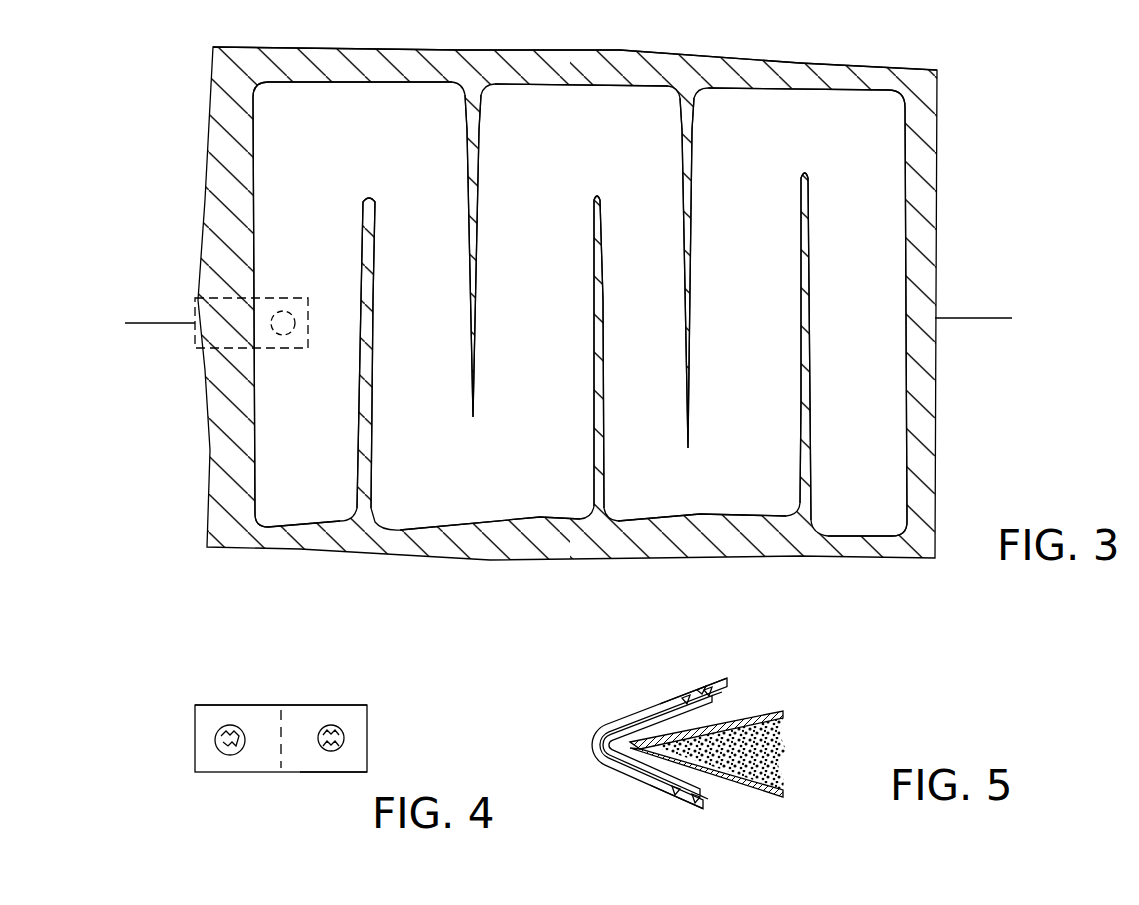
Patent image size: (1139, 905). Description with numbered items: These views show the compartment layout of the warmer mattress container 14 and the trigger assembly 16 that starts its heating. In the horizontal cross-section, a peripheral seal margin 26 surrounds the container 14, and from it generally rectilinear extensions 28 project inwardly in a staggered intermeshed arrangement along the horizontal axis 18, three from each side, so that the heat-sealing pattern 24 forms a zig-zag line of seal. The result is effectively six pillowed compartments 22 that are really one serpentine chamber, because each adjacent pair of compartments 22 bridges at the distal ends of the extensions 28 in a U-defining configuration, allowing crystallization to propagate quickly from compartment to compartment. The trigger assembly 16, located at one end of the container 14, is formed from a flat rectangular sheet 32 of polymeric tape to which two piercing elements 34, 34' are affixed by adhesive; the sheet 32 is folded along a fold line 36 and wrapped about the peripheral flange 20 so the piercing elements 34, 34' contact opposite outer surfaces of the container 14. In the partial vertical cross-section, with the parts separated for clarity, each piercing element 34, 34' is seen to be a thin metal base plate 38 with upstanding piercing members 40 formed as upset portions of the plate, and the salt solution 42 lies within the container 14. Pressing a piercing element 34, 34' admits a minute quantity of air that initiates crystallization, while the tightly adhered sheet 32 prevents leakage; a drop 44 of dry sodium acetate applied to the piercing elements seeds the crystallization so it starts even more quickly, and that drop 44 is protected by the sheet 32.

In FIG. 5, the container 14 is at (783, 712).
In FIG. 4, the trigger assembly 16 is at (190, 732).
In FIG. 5, the trigger assembly 16 is at (703, 821).
In FIG. 3, the horizontal axis 18 is at (165, 323).
In FIG. 5, the peripheral flange 20 is at (638, 742).
In FIG. 3, the compartments 22 is at (383, 117).
In FIG. 3, the heat-sealing pattern 24 is at (850, 565).
In FIG. 3, the peripheral seal margin 26 is at (478, 67).
In FIG. 3, the rectilinear extensions 28 is at (363, 248).
In FIG. 4, the flat rectangular sheet 32 is at (247, 710).
In FIG. 4, the piercing element 34 is at (207, 779).
In FIG. 5, the piercing element 34 is at (672, 684).
In FIG. 4, the piercing element 34' is at (331, 796).
In FIG. 5, the piercing element 34' is at (670, 815).
In FIG. 4, the fold line 36 is at (277, 765).
In FIG. 4, the metal base plate 38 is at (333, 727).
In FIG. 5, the metal base plate 38 is at (713, 693).
In FIG. 4, the piercing members 40 is at (340, 745).
In FIG. 5, the piercing members 40 is at (717, 700).
In FIG. 5, the salt solution 42 is at (787, 758).
In FIG. 4, the drop of sodium acetate 44 is at (337, 747).
In FIG. 5, the drop of sodium acetate 44 is at (702, 687).